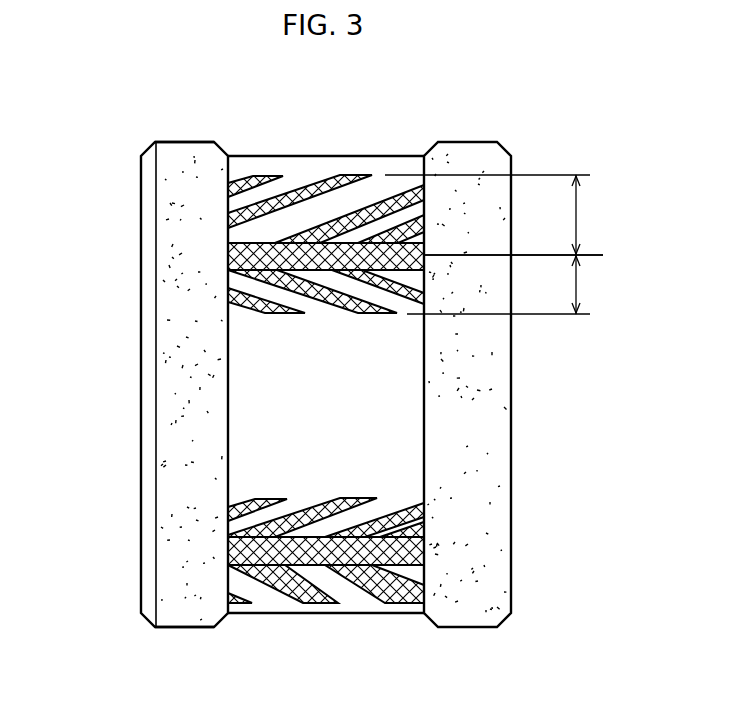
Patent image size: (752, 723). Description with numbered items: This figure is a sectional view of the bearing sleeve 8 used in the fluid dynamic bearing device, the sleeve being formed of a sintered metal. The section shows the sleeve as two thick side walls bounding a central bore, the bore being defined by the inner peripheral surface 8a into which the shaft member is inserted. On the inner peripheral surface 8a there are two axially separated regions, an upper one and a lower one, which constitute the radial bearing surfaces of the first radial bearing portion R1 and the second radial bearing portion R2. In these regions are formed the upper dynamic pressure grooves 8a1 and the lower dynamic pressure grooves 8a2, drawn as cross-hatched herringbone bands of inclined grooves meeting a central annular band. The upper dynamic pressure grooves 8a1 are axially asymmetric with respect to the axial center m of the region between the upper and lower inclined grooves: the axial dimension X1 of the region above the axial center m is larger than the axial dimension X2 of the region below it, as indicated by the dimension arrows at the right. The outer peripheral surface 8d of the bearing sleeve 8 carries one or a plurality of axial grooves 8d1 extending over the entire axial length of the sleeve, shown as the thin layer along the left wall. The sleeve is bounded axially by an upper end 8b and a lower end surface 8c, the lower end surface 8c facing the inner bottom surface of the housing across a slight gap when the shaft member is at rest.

The bearing sleeve 8 is at (106, 156).
The inner peripheral surface 8a is at (426, 385).
The upper dynamic pressure grooves 8a1 is at (276, 186).
The lower dynamic pressure grooves 8a2 is at (283, 508).
The upper end portion 8b is at (205, 140).
The lower end surface 8c is at (195, 629).
The outer peripheral surface 8d is at (142, 353).
The axial groove 8d1 is at (157, 408).
The first radial bearing portion R1 is at (227, 239).
The second radial bearing portion R2 is at (227, 549).
The axial dimension of the region on the upper side of the axial center X1 is at (501, 215).
The axial dimension of the region on the lower side of the axial center X2 is at (512, 284).
The axial center m is at (528, 256).